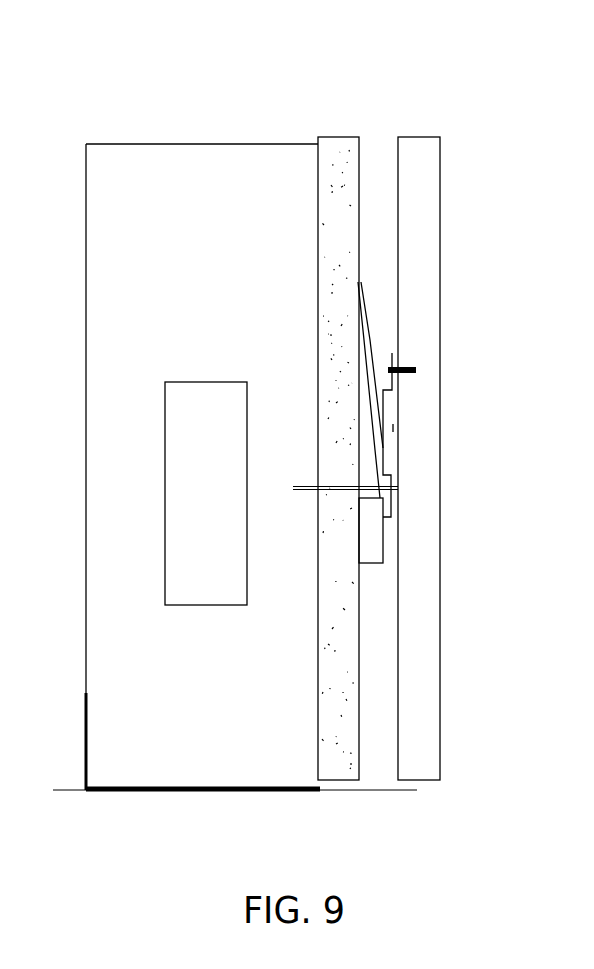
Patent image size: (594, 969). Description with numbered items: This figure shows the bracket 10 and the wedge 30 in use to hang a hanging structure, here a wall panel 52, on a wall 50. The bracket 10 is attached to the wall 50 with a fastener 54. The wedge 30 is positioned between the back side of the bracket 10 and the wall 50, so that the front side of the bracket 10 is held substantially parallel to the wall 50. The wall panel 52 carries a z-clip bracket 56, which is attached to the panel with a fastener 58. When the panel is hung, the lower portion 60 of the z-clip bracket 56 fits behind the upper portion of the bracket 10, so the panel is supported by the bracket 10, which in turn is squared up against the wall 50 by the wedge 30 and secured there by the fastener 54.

The bracket 10 is at (392, 467).
The wedge 30 is at (365, 370).
The wall 50 is at (335, 137).
The wall panel 52 is at (420, 137).
The fastener 54 is at (310, 490).
The z-clip bracket 56 is at (392, 407).
The fastener 58 is at (415, 372).
The lower portion of the z-clip bracket 60 is at (395, 430).